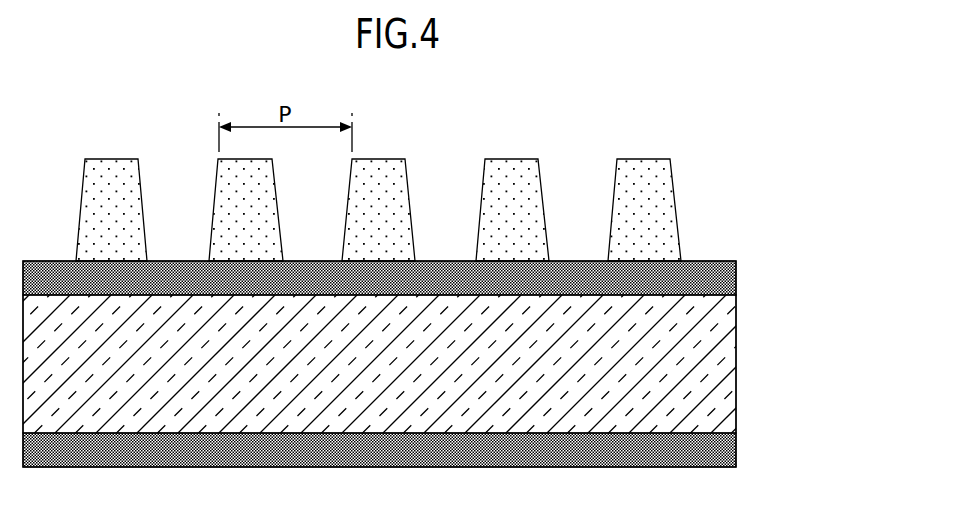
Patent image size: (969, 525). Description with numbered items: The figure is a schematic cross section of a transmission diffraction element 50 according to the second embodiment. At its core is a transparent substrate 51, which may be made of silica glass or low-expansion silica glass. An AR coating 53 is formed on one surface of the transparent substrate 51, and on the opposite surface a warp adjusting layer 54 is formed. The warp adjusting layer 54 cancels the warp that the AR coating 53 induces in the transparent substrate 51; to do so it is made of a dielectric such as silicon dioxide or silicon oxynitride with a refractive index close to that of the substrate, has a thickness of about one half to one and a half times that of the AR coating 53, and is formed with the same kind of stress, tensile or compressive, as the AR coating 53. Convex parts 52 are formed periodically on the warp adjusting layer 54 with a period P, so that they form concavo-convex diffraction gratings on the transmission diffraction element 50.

The transmission diffraction element 50 is at (750, 108).
The transparent substrate 51 is at (723, 362).
The convex parts 52 is at (672, 218).
The AR coating 53 is at (723, 453).
The warp adjusting layer 54 is at (723, 280).